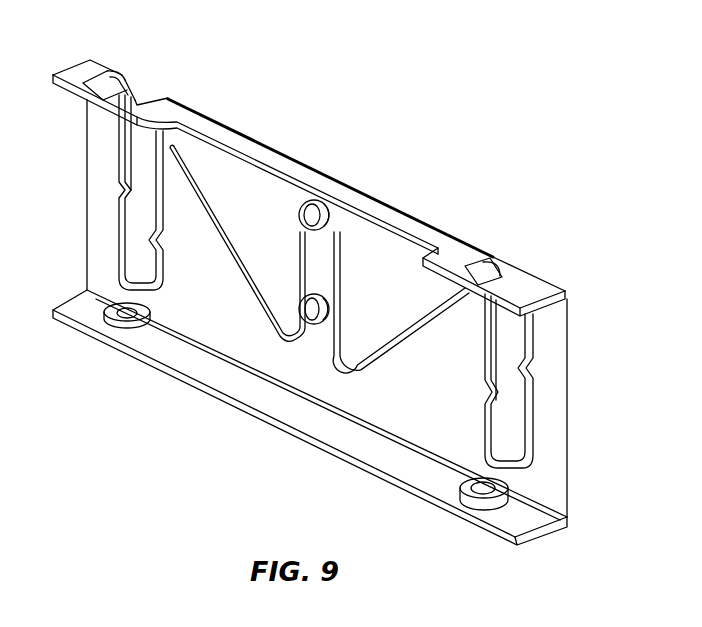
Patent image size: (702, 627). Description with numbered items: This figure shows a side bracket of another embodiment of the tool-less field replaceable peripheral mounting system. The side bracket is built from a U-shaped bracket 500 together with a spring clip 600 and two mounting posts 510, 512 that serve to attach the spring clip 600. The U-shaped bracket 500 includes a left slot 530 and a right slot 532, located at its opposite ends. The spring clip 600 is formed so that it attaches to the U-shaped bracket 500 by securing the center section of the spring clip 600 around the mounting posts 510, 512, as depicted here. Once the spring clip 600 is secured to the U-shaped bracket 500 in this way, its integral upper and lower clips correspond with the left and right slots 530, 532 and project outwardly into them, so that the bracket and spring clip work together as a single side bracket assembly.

The U-shaped bracket 500 is at (449, 97).
The mounting post 510 is at (340, 227).
The mounting post 512 is at (317, 333).
The left slot 530 is at (147, 89).
The right slot 532 is at (521, 275).
The spring clip 600 is at (233, 253).